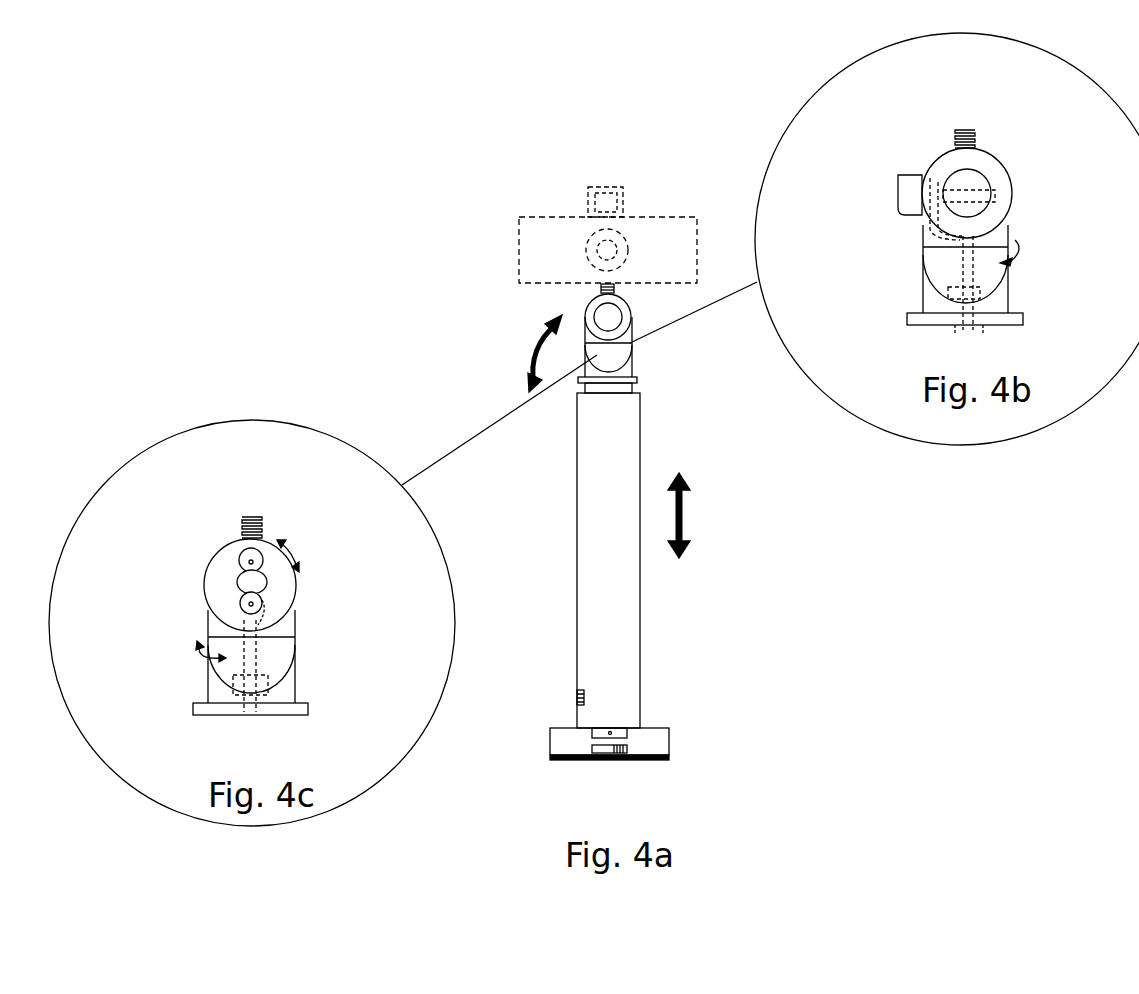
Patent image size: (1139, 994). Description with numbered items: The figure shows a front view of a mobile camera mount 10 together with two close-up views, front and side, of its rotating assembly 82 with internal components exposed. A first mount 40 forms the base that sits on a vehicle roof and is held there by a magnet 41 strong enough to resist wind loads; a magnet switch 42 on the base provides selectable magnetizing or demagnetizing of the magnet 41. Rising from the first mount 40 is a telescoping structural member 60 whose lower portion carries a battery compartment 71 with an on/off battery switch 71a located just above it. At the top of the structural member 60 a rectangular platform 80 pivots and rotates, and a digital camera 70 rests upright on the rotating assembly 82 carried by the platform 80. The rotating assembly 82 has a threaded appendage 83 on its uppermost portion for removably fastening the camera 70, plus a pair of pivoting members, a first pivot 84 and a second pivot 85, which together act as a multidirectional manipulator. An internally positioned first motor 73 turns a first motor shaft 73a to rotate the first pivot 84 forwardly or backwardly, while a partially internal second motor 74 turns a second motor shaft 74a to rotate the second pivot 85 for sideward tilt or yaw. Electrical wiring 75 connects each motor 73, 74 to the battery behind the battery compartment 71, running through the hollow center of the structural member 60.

In FIG. 4A, the mobile camera mount 10 is at (140, 160).
In FIG. 4A, the first mount 40 is at (565, 738).
In FIG. 4A, the magnet 41 is at (592, 758).
In FIG. 4A, the magnet switch 42 is at (626, 747).
In FIG. 4A, the structural member 60 is at (551, 478).
In FIG. 4A, the digital camera 70 is at (552, 217).
In FIG. 4A, the battery compartment 71 is at (620, 730).
In FIG. 4A, the battery switch 71a is at (578, 690).
In FIG. 4B, the first motor 73 is at (988, 304).
In FIG. 4C, the first motor 73 is at (237, 698).
In FIG. 4B, the first motor shaft 73a is at (970, 265).
In FIG. 4C, the first motor shaft 73a is at (258, 652).
In FIG. 4B, the second motor 74 is at (905, 190).
In FIG. 4C, the second motor 74 is at (255, 580).
In FIG. 4B, the second motor shaft 74a is at (975, 190).
In FIG. 4B, the electrical wiring 75 is at (913, 224).
In FIG. 4C, the electrical wiring 75 is at (257, 617).
In FIG. 4A, the platform 80 is at (637, 383).
In FIG. 4B, the platform 80 is at (1015, 325).
In FIG. 4C, the platform 80 is at (298, 710).
In FIG. 4A, the rotating assembly 82 is at (652, 357).
In FIG. 4B, the rotating assembly 82 is at (946, 212).
In FIG. 4C, the rotating assembly 82 is at (248, 597).
In FIG. 4B, the threaded appendage 83 is at (958, 133).
In FIG. 4C, the threaded appendage 83 is at (248, 518).
In FIG. 4B, the first pivot 84 is at (935, 260).
In FIG. 4C, the first pivot 84 is at (285, 690).
In FIG. 4B, the second pivot 85 is at (1008, 208).
In FIG. 4C, the second pivot 85 is at (228, 565).